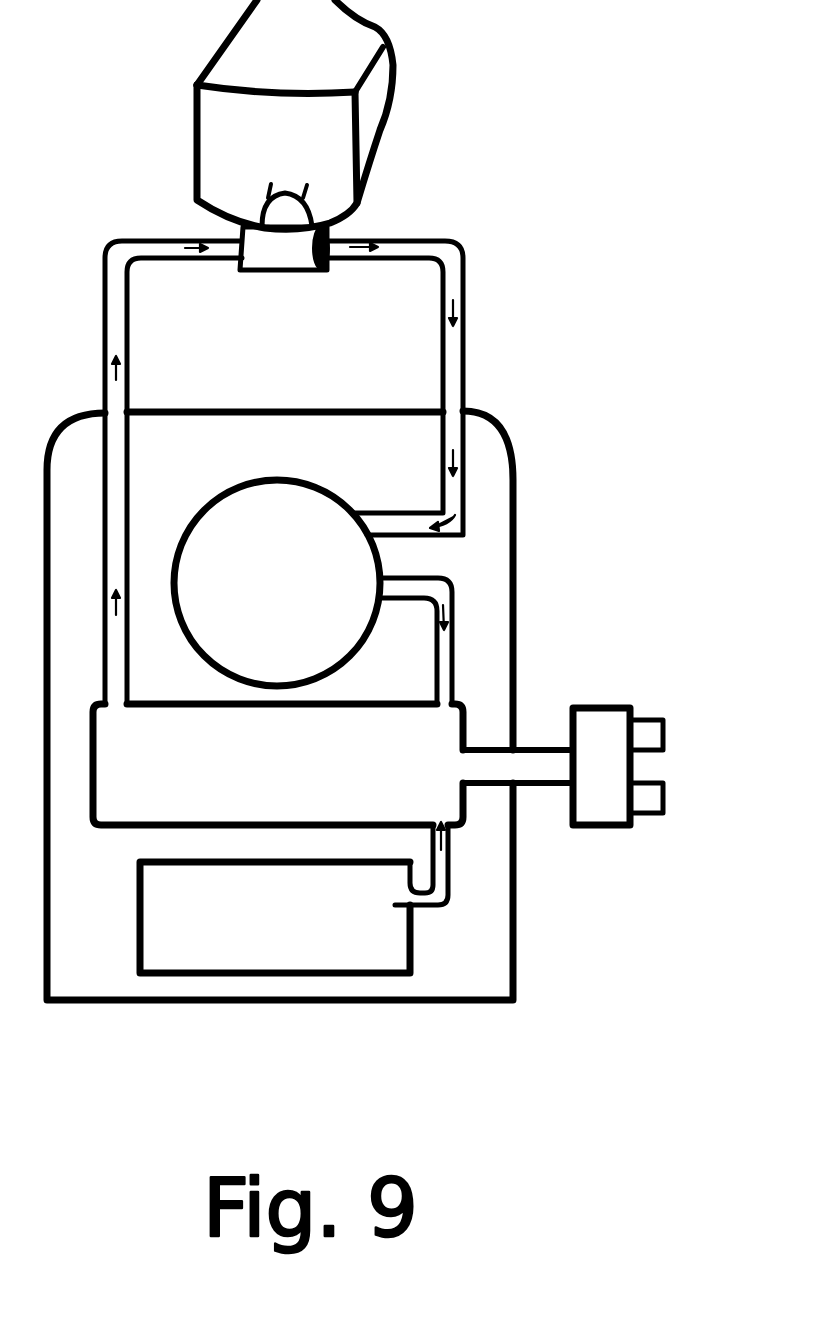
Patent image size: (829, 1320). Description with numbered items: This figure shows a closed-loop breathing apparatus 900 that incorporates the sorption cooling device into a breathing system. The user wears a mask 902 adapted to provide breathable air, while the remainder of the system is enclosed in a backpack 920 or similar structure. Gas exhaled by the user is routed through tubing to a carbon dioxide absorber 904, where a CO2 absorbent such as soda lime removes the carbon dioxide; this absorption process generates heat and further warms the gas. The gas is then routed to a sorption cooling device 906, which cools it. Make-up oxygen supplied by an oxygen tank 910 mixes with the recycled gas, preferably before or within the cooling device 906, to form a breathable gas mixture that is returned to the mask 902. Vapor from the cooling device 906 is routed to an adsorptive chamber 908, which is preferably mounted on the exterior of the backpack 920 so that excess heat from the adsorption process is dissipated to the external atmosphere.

The breathing apparatus 900 is at (562, 375).
The mask 902 is at (380, 132).
The carbon dioxide absorber 904 is at (292, 593).
The sorption cooling device 906 is at (280, 784).
The adsorptive chamber 908 is at (627, 706).
The oxygen tank 910 is at (275, 929).
The backpack 920 is at (515, 570).